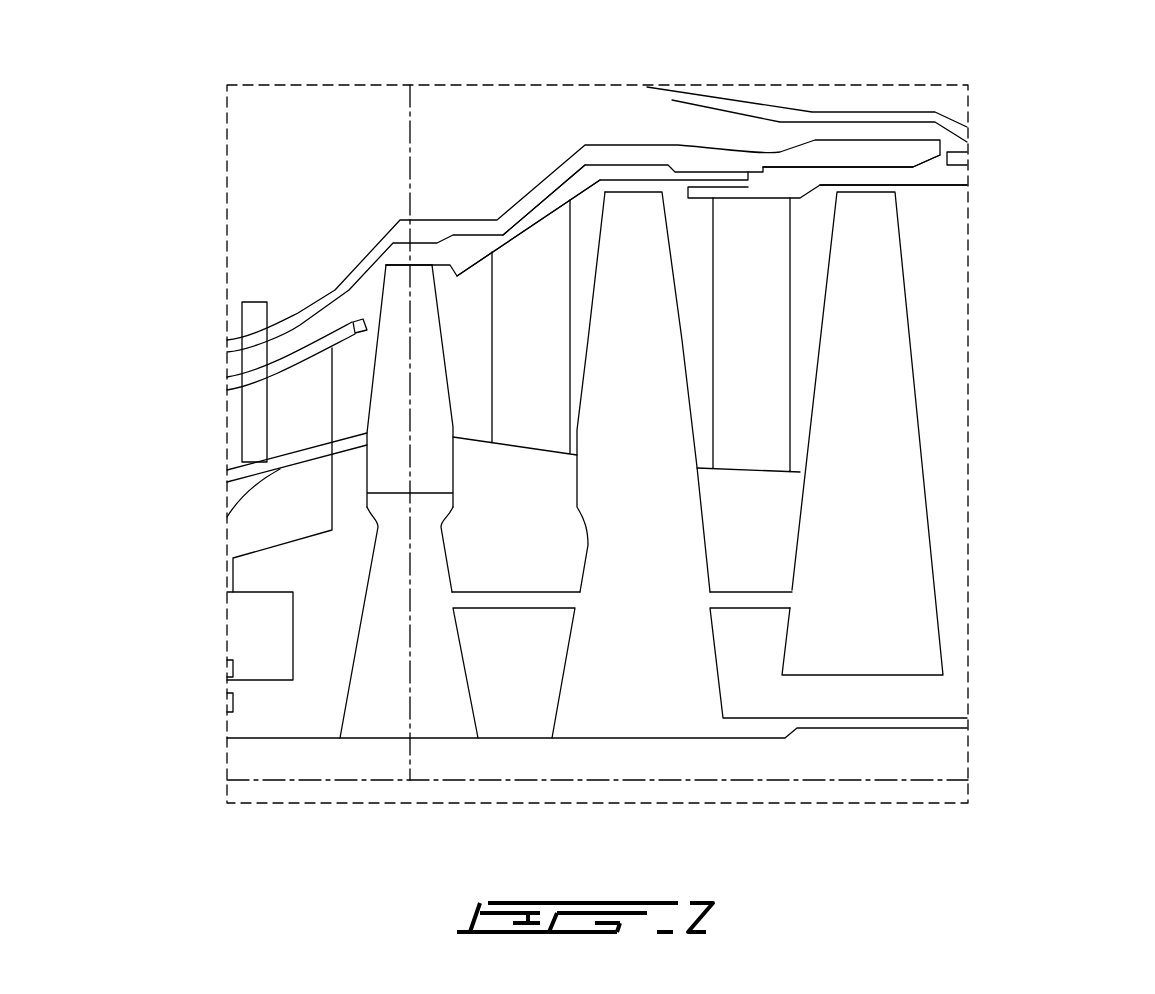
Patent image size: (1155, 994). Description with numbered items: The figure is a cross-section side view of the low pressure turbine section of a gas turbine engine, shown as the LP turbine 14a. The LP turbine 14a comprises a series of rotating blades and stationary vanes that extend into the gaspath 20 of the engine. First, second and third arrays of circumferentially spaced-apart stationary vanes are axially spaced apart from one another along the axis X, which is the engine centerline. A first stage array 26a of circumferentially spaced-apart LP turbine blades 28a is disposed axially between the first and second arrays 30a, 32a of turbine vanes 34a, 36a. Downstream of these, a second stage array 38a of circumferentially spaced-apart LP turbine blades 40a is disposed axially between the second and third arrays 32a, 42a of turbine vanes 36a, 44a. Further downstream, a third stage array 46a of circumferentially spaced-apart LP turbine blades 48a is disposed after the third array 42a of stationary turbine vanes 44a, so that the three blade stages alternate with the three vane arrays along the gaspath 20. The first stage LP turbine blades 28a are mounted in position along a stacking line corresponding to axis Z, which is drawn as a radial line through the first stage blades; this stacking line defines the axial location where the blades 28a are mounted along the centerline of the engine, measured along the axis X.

The LP turbine 14a is at (1010, 213).
The gaspath 20 is at (352, 372).
The first stage array 26a is at (428, 263).
The LP turbine blades 28a is at (448, 352).
The first array 30a is at (317, 548).
The second array 32a is at (532, 457).
The turbine vanes 34a is at (305, 390).
The turbine vanes 36a is at (550, 253).
The second stage array 38a is at (651, 133).
The LP turbine blades 40a is at (678, 303).
The third array 42a is at (754, 494).
The turbine vanes 44a is at (763, 223).
The third stage array 46a is at (875, 185).
The LP turbine blades 48a is at (880, 322).
The axis Z is at (410, 122).
The axis X is at (893, 780).